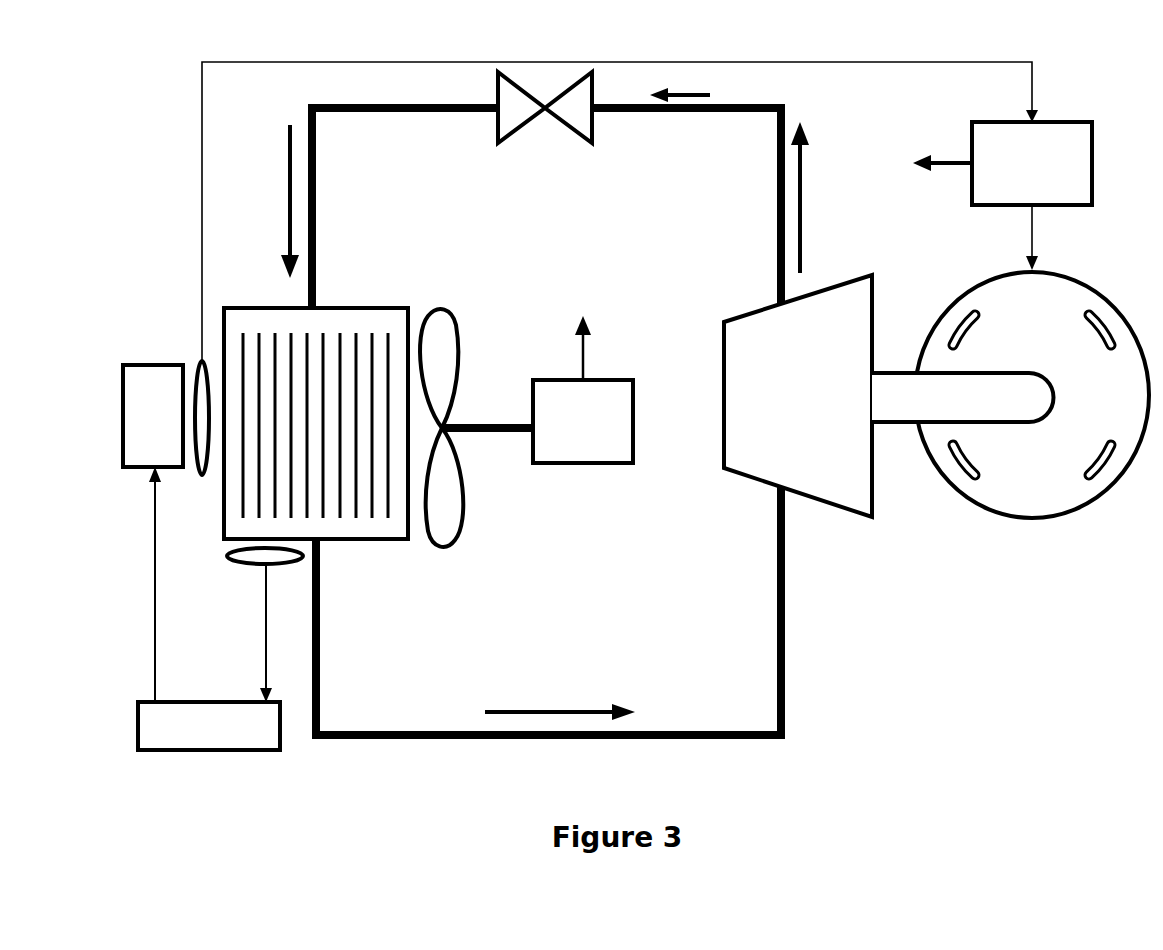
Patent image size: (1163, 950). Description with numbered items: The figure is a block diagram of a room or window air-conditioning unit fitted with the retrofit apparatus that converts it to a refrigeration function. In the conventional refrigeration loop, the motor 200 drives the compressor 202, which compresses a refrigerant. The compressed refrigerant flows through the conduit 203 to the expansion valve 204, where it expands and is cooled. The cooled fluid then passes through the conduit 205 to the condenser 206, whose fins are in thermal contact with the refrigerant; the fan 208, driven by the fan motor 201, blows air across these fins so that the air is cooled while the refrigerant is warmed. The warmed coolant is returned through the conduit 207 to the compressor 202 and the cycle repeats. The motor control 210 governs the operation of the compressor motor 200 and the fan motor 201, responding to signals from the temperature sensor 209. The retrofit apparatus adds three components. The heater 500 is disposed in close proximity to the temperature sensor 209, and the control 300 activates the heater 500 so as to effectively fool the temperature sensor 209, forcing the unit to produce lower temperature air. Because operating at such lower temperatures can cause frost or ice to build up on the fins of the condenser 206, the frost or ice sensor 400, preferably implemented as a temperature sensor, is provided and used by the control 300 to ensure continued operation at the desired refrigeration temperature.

The motor 200 is at (1054, 520).
The fan motor 201 is at (590, 480).
The compressor 202 is at (855, 513).
The conduit 203 is at (776, 209).
The expansion valve 204 is at (575, 130).
The conduit 205 is at (316, 206).
The condenser 206 is at (380, 540).
The conduit 207 is at (428, 732).
The fan 208 is at (462, 527).
The temperature sensor 209 is at (198, 360).
The motor control 210 is at (1065, 122).
The control unit 300 is at (190, 752).
The frost or ice sensor 400 is at (236, 566).
The heater 500 is at (153, 365).